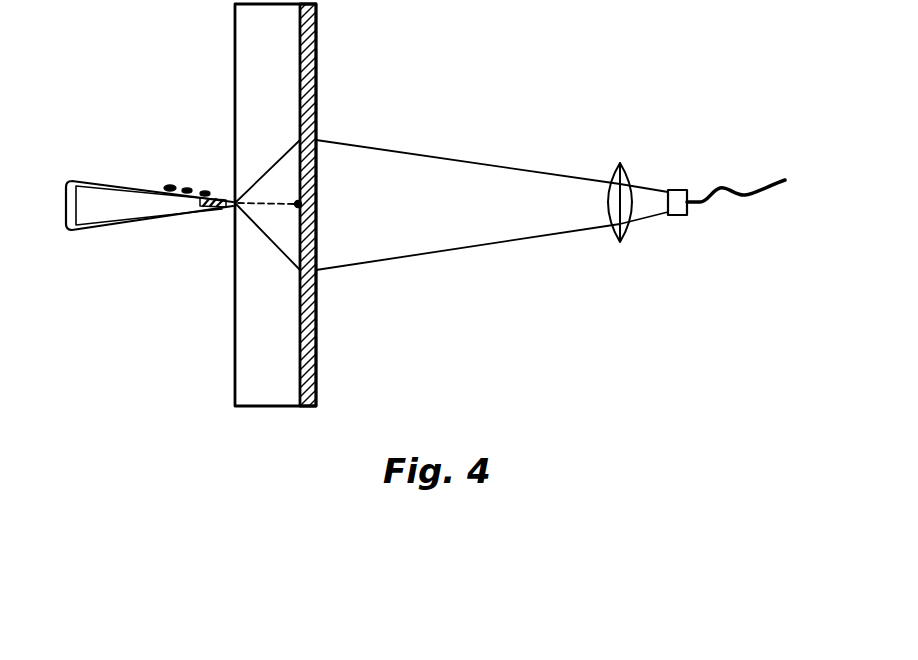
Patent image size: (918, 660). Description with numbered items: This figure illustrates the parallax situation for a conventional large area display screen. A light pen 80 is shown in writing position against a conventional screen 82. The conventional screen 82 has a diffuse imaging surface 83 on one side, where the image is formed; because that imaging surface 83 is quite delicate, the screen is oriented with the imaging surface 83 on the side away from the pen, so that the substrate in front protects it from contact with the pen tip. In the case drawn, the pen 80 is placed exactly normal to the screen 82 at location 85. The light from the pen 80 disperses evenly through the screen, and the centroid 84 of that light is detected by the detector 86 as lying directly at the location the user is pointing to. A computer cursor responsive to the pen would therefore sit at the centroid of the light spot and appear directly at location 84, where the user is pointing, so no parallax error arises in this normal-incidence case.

The light pen 80 is at (120, 180).
The conventional screen 82 is at (235, 305).
The diffuse imaging surface 83 is at (316, 65).
The centroid 84 is at (316, 191).
The location 85 is at (231, 192).
The detector 86 is at (678, 190).